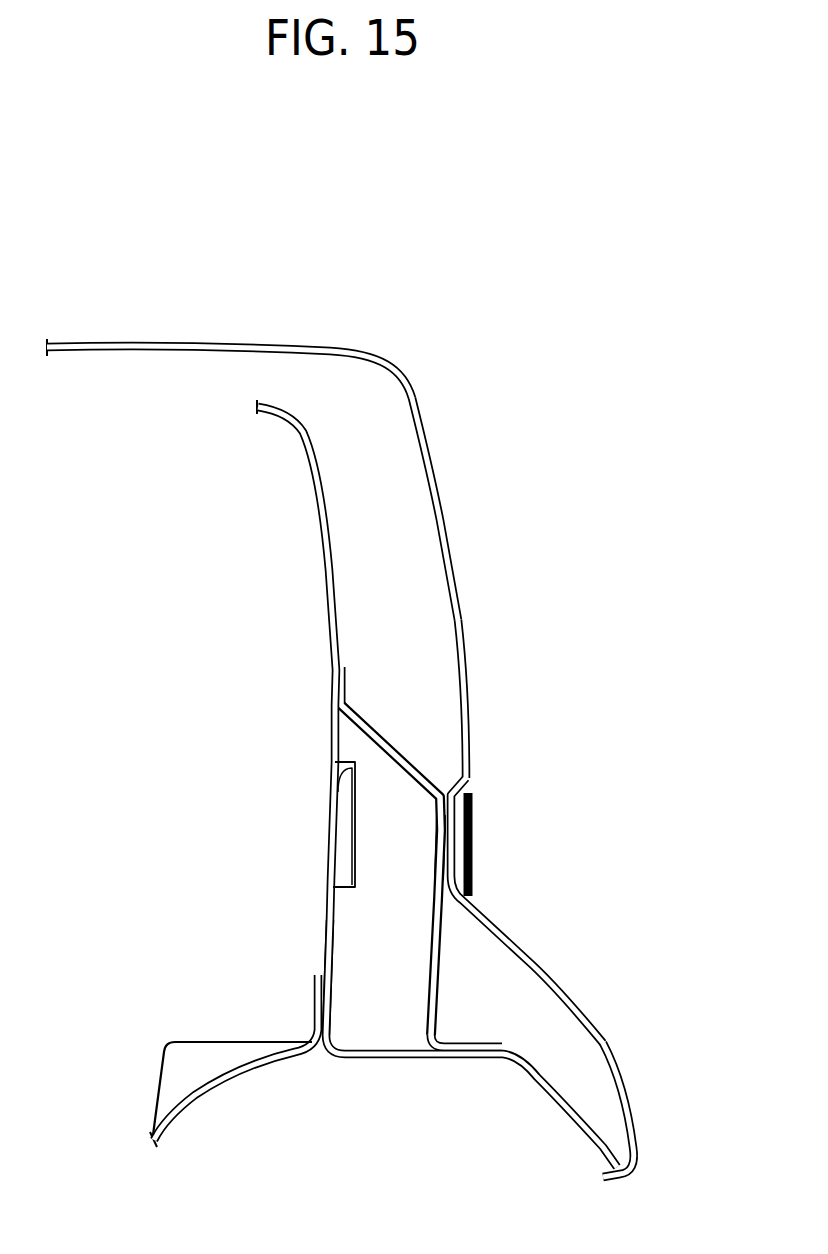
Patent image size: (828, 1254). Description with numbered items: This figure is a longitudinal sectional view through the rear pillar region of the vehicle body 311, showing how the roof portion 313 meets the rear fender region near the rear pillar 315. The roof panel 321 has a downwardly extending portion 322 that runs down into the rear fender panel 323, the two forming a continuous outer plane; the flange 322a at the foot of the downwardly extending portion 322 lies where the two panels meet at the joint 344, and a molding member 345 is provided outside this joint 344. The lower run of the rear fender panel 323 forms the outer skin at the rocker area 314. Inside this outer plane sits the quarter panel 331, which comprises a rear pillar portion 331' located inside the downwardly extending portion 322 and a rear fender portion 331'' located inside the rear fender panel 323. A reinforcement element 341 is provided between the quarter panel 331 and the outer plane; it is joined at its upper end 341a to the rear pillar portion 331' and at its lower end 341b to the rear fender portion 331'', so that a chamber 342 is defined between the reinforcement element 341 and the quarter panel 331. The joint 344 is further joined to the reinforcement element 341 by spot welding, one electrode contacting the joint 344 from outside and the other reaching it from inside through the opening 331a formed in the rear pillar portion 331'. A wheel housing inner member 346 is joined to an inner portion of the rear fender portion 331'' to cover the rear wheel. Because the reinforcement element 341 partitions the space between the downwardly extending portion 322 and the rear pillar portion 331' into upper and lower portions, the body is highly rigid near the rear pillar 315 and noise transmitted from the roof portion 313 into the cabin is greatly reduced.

The vehicle body 311 is at (378, 225).
The roof portion 313 is at (223, 337).
The rocker portion 314 is at (607, 1040).
The rear pillar 315 is at (448, 510).
The roof panel 321 is at (275, 342).
The downwardly extending portion 322 is at (462, 583).
The flange of outer panel 322a is at (453, 858).
The rear fender panel 323 is at (558, 978).
The quarter panel 331 is at (383, 783).
The rear pillar portion 331' is at (269, 552).
The rear fender portion 331'' is at (383, 1071).
The opening 331a is at (332, 800).
The reinforcement element 341 is at (404, 748).
The upper end 341a is at (348, 677).
The lower end 341b is at (468, 1043).
The chamber 342 is at (408, 951).
The joint 344 is at (430, 847).
The molding member 345 is at (472, 800).
The wheel housing inner member 346 is at (192, 1055).